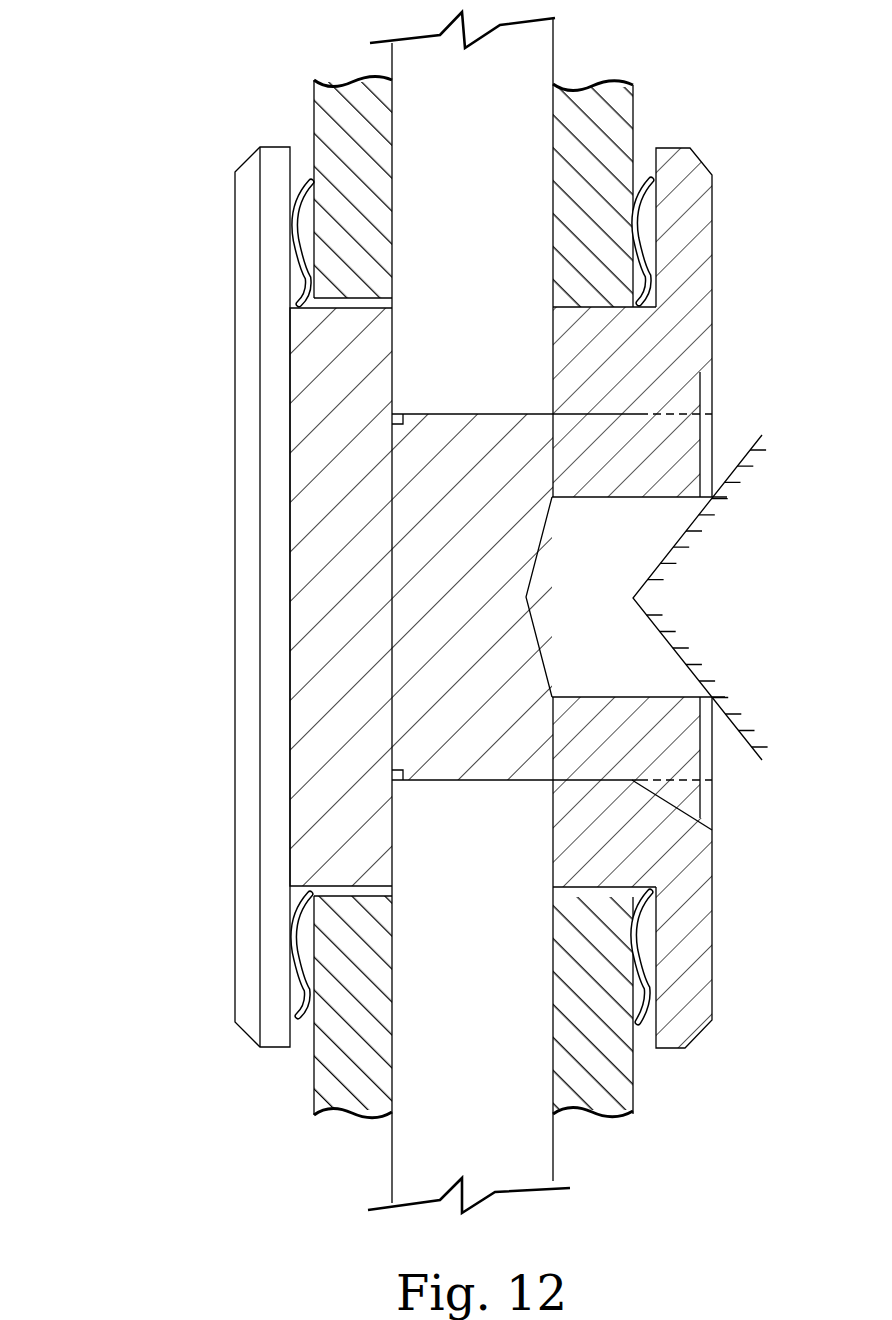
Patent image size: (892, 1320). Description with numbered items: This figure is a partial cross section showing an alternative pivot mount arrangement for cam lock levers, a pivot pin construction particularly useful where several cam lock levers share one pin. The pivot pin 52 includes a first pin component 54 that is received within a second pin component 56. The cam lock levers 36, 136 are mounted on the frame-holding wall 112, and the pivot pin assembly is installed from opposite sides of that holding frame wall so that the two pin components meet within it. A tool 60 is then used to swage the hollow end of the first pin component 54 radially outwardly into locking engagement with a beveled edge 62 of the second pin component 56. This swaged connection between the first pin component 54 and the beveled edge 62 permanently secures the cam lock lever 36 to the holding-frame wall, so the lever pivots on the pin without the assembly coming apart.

The frame-holding wall 112 is at (572, 52).
The cam lock lever 136 is at (322, 128).
The cam lock lever 36 is at (610, 155).
The pivot pin 52 is at (200, 597).
The first pin component 54 is at (305, 713).
The second pin component 56 is at (683, 870).
The tool 60 is at (709, 614).
The beveled edge 62 is at (665, 388).